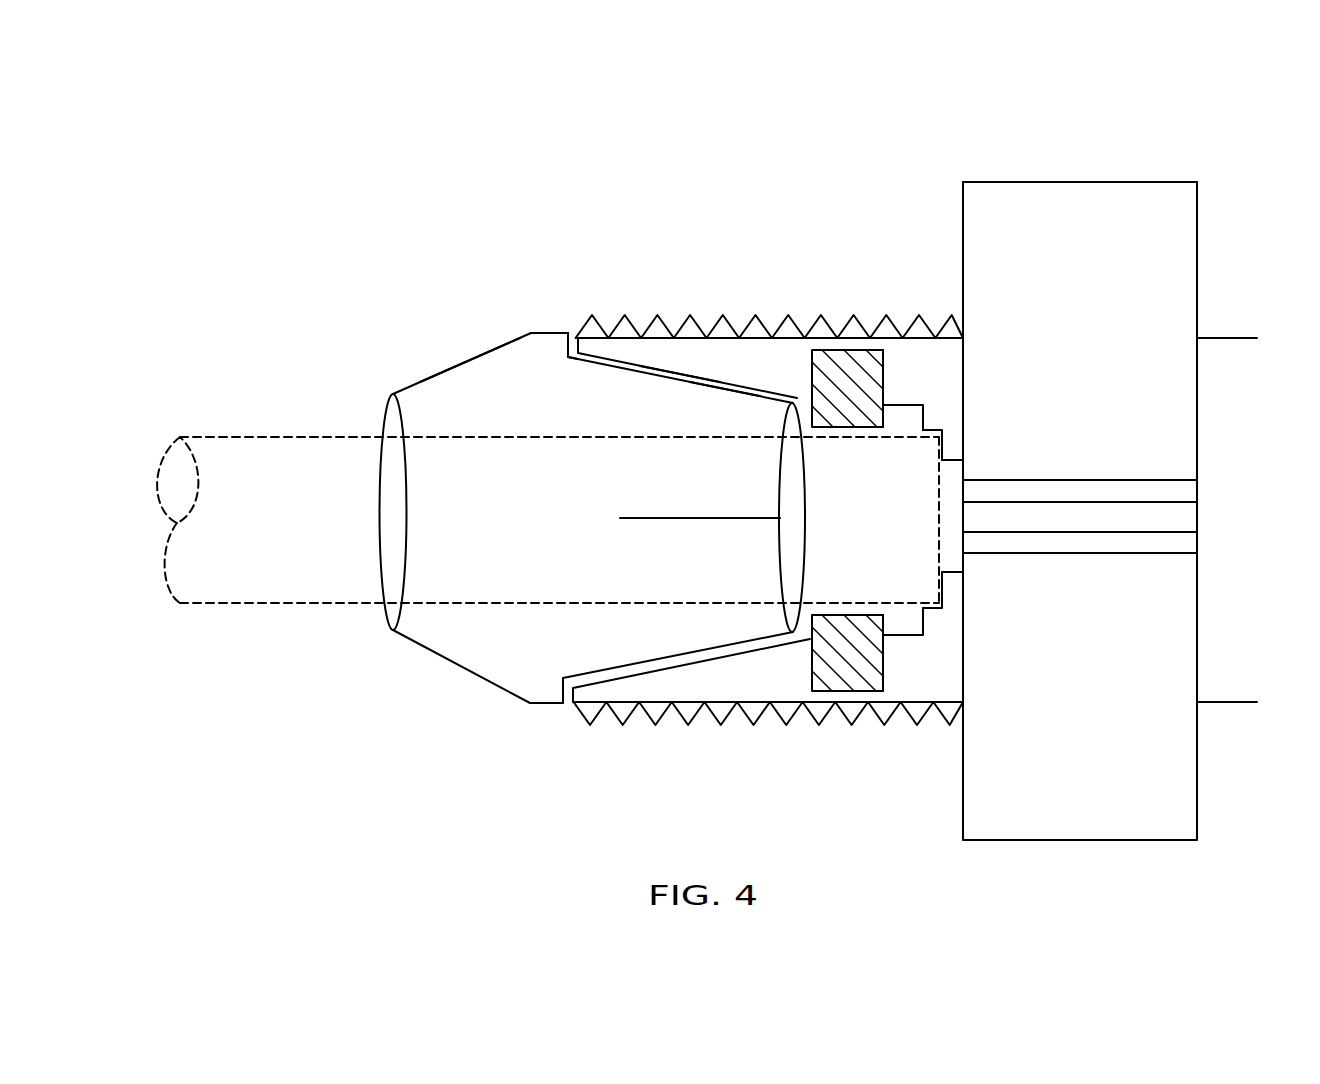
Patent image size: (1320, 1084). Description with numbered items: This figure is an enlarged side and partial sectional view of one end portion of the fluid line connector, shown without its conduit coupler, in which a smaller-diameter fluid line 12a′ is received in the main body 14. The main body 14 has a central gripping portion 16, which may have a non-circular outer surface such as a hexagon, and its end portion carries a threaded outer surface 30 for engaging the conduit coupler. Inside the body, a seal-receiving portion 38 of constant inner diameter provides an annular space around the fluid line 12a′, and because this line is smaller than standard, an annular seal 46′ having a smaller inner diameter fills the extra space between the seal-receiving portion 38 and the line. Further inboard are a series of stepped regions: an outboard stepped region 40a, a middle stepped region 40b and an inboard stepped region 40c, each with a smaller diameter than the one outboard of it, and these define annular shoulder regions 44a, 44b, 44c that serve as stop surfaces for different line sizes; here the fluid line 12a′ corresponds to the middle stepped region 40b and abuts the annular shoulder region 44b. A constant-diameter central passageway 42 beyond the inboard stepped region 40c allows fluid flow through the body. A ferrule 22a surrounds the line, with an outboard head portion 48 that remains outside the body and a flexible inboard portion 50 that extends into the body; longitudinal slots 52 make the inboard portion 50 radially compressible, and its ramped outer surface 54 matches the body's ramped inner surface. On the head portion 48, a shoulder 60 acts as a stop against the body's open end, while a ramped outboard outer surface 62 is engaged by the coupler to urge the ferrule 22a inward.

The fluid line 12a′ is at (290, 437).
The main body 14 is at (962, 130).
The central gripping portion 16 is at (1113, 170).
The ferrule 22a is at (456, 364).
The threaded outer surface 30 is at (677, 298).
The seal-receiving portion 38 is at (847, 350).
The outboard stepped region 40a is at (912, 404).
The middle stepped region 40b is at (934, 430).
The inboard stepped region 40c is at (953, 458).
The central passageway 42 is at (1100, 480).
The annular shoulder region 44a is at (913, 423).
The annular shoulder region 44b is at (937, 442).
The annular shoulder region 44c is at (962, 473).
The annular seal 46′ is at (886, 388).
The outboard head portion 48 is at (542, 282).
The flexible inboard portion 50 is at (706, 360).
The longitudinal slot 52 is at (693, 518).
The ramped outer surface 54 is at (736, 370).
The shoulder 60 is at (570, 318).
The ramped outboard outer surface 62 is at (496, 335).